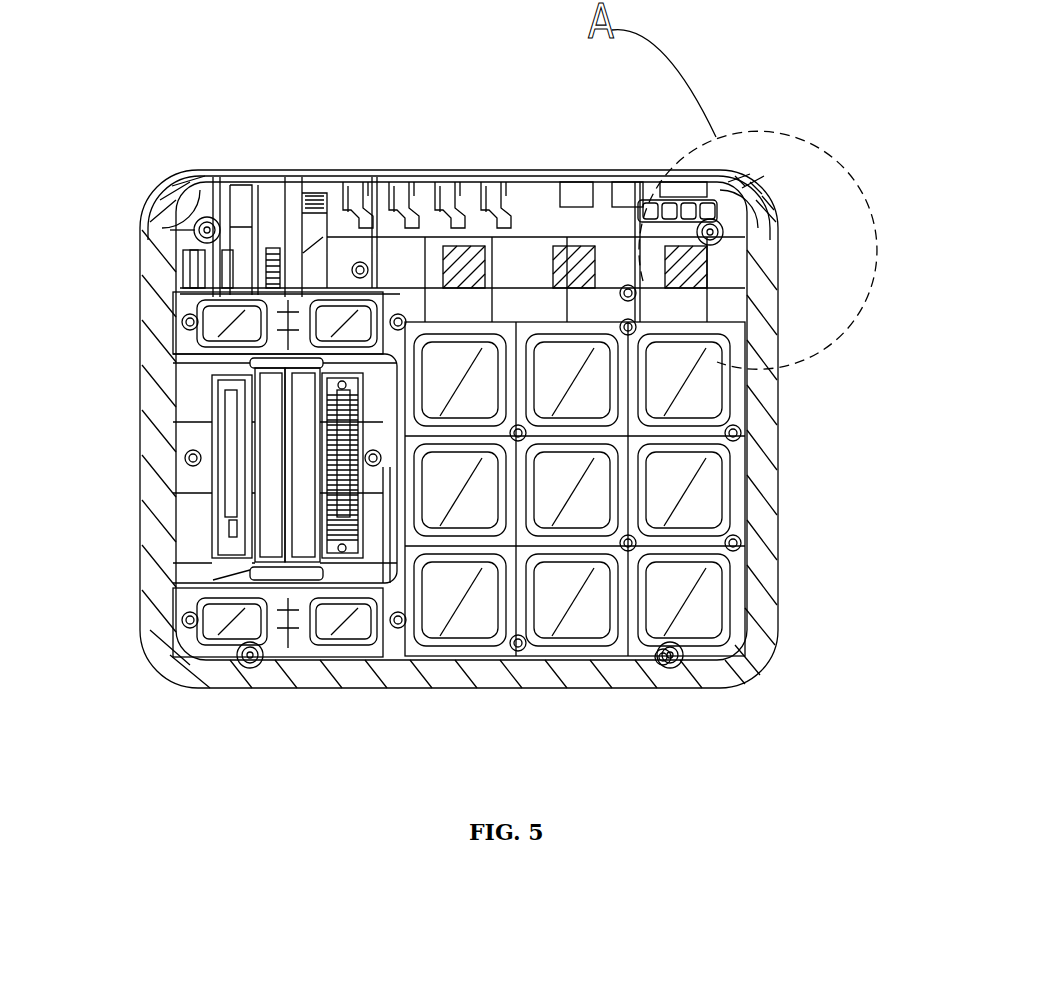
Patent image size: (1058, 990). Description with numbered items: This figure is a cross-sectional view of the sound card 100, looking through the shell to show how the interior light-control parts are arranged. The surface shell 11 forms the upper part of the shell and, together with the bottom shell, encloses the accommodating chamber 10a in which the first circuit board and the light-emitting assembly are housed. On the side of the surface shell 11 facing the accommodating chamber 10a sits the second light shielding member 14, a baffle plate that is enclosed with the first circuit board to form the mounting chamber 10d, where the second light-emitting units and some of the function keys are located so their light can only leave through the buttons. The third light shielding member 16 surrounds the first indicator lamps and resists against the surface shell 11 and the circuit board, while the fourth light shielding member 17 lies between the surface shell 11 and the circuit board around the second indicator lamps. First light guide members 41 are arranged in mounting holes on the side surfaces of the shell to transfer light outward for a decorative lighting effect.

The sound card 100 is at (205, 50).
The accommodating chamber 10a is at (463, 317).
The third light shielding member 16 is at (712, 195).
The first light guide member 41 is at (763, 262).
The surface shell 11 is at (745, 320).
The second light shielding member 14 is at (633, 487).
The fourth light shielding member 17 is at (203, 580).
The mounting chamber 10d is at (533, 540).